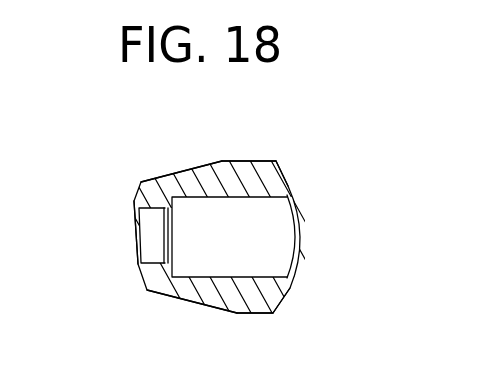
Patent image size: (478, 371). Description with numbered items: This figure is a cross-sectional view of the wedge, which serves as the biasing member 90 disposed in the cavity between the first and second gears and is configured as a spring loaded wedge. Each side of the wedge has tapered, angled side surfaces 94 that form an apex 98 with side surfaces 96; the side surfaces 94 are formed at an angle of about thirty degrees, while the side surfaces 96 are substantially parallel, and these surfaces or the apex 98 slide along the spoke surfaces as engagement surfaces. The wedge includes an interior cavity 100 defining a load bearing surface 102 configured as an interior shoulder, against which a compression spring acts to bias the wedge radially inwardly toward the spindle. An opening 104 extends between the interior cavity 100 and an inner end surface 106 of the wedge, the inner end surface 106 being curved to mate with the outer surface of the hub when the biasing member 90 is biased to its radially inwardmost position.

The biasing member 90 is at (302, 287).
The tapered side surfaces 94 is at (187, 166).
The side surfaces 96 is at (252, 160).
The apex 98 is at (239, 161).
The interior cavity 100 is at (278, 252).
The load bearing surface 102 is at (176, 201).
The opening 104 is at (147, 250).
The inner end surface 106 is at (136, 226).